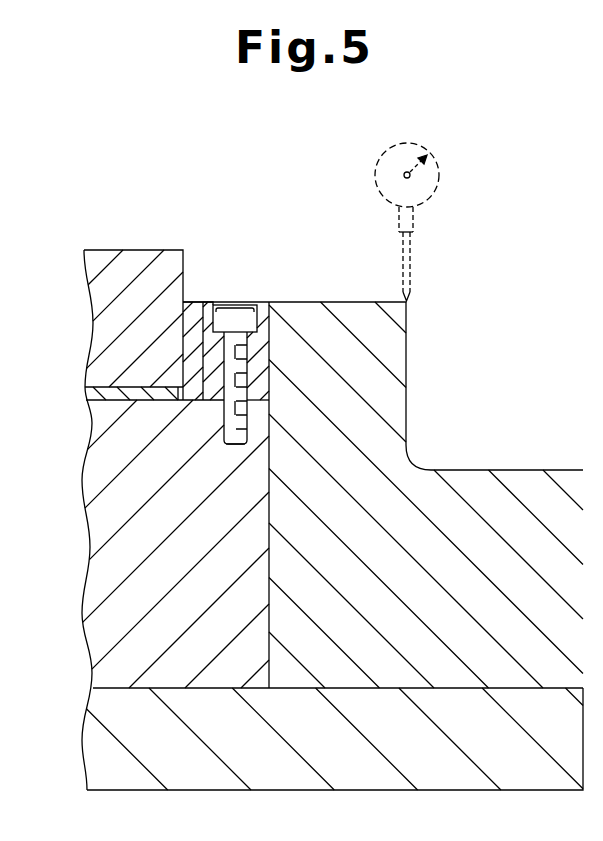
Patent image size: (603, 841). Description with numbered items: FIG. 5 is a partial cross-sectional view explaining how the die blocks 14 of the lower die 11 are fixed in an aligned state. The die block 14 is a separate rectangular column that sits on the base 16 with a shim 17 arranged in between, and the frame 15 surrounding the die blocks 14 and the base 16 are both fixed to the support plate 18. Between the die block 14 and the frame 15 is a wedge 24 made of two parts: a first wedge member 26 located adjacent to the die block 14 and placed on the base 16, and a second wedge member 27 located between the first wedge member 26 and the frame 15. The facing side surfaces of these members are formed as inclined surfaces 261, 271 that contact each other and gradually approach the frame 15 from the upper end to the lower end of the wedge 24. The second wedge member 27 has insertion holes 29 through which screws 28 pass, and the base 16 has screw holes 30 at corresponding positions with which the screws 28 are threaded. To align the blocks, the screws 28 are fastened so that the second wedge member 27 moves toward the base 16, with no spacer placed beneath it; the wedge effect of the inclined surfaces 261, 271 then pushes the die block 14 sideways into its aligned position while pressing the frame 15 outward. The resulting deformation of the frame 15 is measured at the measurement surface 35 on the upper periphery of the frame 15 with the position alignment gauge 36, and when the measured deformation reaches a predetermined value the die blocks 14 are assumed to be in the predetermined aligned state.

The lower die 11 is at (98, 250).
The die block 14 is at (136, 250).
The frame 15 is at (362, 301).
The base 16 is at (214, 689).
The shim 17 is at (144, 401).
The support plate 18 is at (212, 791).
The wedge 24 is at (340, 243).
The first wedge member 26 is at (194, 302).
The inclined surface 261 is at (189, 304).
The second wedge member 27 is at (264, 302).
The inclined surface 271 is at (207, 306).
The screw 28 is at (253, 352).
The insertion hole 29 is at (248, 381).
The screw hole 30 is at (248, 443).
The measurement surface 35 is at (407, 338).
The position alignment gauge 36 is at (439, 176).